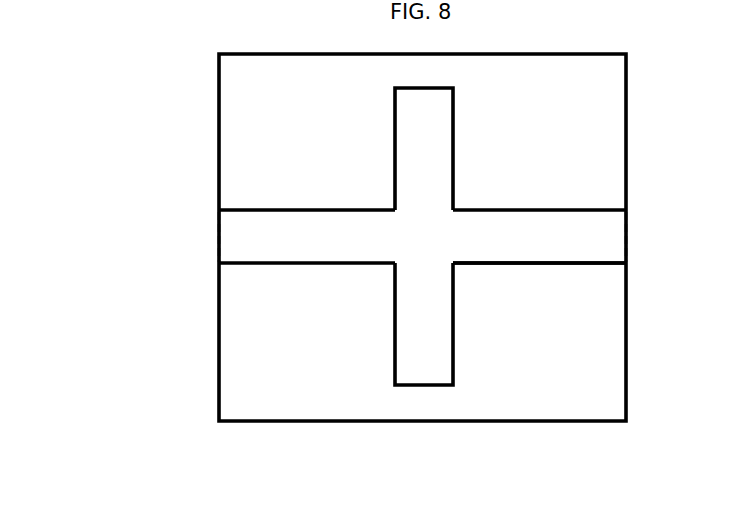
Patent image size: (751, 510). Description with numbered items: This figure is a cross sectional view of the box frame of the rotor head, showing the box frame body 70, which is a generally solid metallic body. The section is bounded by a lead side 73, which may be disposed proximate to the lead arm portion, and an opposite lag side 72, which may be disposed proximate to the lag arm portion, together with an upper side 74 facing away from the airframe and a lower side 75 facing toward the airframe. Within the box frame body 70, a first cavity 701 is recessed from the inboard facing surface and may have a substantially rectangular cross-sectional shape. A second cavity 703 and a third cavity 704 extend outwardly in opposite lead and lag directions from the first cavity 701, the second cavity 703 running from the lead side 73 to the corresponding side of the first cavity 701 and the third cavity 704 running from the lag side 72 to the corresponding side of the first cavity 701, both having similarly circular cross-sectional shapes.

The box frame body 70 is at (306, 374).
The first cavity 701 is at (395, 128).
The second cavity 703 is at (305, 263).
The third cavity 704 is at (500, 263).
The lag side 72 is at (219, 363).
The lead side 73 is at (626, 363).
The upper side 74 is at (268, 54).
The lower side 75 is at (238, 421).